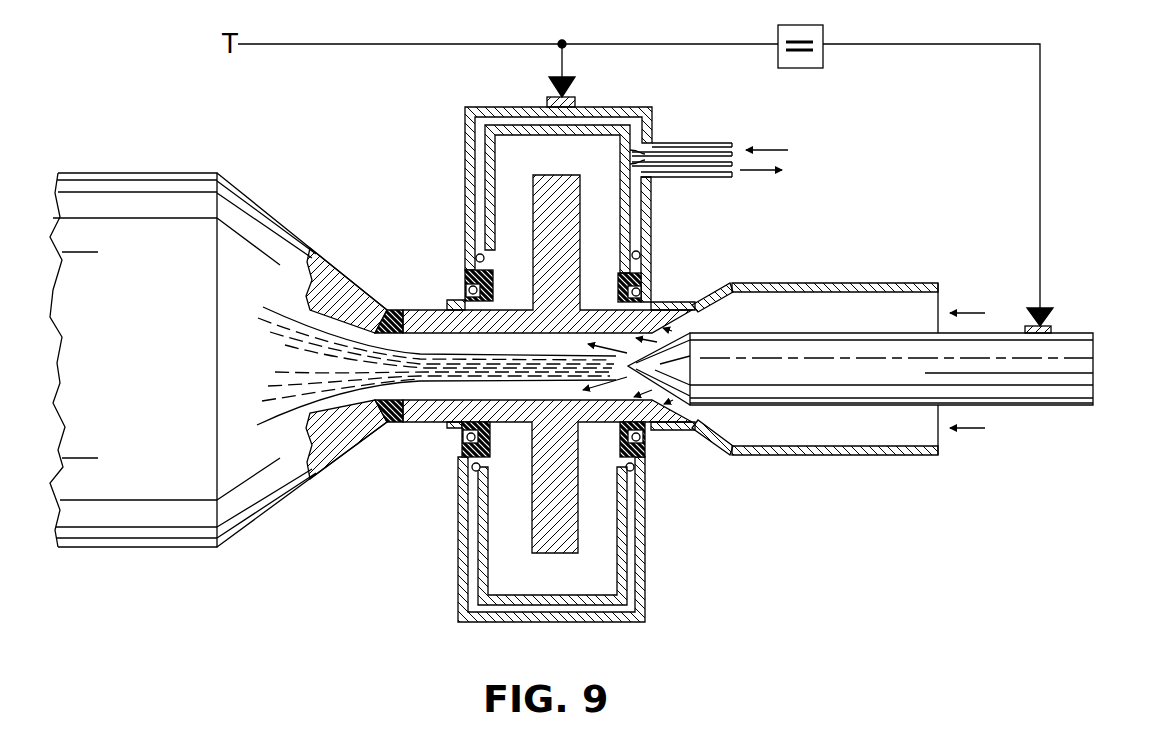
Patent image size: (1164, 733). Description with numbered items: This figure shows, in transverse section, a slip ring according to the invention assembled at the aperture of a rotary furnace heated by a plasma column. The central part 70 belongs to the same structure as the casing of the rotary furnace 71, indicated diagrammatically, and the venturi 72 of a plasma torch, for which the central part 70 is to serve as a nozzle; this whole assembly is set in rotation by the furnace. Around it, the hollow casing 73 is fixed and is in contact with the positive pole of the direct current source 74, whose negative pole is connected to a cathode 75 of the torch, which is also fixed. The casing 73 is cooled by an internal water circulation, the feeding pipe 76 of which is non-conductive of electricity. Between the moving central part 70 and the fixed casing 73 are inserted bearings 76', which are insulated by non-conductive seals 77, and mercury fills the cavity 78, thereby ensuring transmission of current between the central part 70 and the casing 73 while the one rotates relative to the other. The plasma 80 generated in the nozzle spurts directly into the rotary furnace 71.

The central part 70 is at (545, 192).
The rotary furnace 71 is at (283, 248).
The venturi 72 is at (800, 455).
The hollow casing 73 is at (640, 113).
The direct current source 74 is at (807, 70).
The cathode 75 is at (1080, 368).
The feeding pipe 76 is at (709, 135).
The bearings 76' is at (449, 271).
The non-conductive seals 77 is at (462, 443).
The cavity 78 is at (600, 253).
The plasma 80 is at (332, 375).